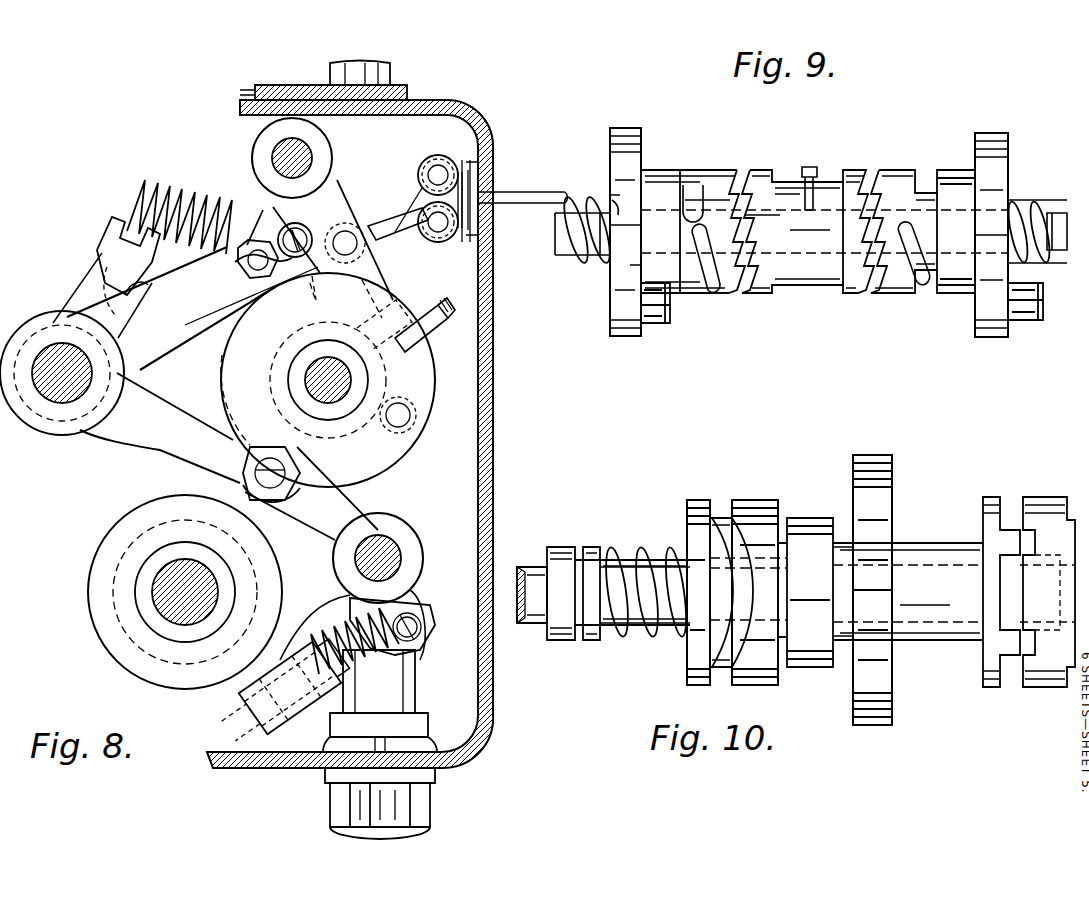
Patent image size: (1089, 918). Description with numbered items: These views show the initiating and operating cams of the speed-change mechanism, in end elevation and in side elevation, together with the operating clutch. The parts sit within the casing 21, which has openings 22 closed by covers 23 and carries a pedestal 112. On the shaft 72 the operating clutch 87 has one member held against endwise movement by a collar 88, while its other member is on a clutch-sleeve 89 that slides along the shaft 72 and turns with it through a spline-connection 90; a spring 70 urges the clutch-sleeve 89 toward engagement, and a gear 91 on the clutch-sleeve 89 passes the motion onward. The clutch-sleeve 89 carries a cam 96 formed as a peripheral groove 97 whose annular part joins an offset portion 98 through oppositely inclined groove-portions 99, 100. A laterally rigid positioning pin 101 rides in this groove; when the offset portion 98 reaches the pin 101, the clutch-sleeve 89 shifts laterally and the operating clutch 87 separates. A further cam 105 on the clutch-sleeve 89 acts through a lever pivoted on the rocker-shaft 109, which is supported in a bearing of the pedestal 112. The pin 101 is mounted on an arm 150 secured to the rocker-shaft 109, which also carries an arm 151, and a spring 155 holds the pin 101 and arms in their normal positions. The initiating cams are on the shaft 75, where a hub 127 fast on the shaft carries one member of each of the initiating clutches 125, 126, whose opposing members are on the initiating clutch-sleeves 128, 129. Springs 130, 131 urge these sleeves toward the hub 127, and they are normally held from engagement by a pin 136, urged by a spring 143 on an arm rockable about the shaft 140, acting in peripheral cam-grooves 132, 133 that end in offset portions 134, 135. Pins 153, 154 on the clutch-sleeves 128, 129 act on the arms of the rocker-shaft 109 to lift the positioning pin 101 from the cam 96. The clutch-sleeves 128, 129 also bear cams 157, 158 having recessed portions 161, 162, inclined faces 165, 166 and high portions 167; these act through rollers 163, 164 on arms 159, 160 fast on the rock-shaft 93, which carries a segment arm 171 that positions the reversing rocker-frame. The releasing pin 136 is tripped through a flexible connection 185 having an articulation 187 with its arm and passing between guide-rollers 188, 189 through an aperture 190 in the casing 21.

In FIG. 8, the casing 21 is at (493, 488).
In FIG. 8, the openings 22 is at (313, 110).
In FIG. 8, the covers 23 is at (392, 85).
In FIG. 10, the spring 70 is at (650, 620).
In FIG. 8, the shaft 72 is at (172, 605).
In FIG. 10, the shaft 72 is at (538, 605).
In FIG. 8, the shaft 75 is at (360, 395).
In FIG. 9, the shaft 75 is at (742, 290).
In FIG. 10, the operating clutch 87 is at (1020, 688).
In FIG. 10, the collar 88 is at (1035, 555).
In FIG. 10, the clutch-sleeve 89 is at (905, 548).
In FIG. 10, the spline-connection 90 is at (680, 555).
In FIG. 10, the gear 91 is at (818, 668).
In FIG. 8, the rock-shaft 93 is at (60, 385).
In FIG. 10, the cam 96 is at (755, 512).
In FIG. 10, the peripheral groove 97 is at (718, 512).
In FIG. 10, the offset portion 98 is at (745, 595).
In FIG. 10, the inclined groove-portion 99 is at (745, 575).
In FIG. 10, the inclined groove-portion 100 is at (783, 667).
In FIG. 8, the positioning pin 101 is at (258, 680).
In FIG. 10, the cam 105 is at (872, 715).
In FIG. 8, the rocker-shaft 109 is at (385, 560).
In FIG. 8, the pedestal 112 is at (400, 690).
In FIG. 9, the initiating clutch 125 is at (747, 172).
In FIG. 9, the initiating clutch 126 is at (866, 176).
In FIG. 9, the hub 127 is at (815, 190).
In FIG. 9, the initiating clutch-sleeve 128 is at (716, 175).
In FIG. 9, the initiating clutch-sleeve 129 is at (896, 178).
In FIG. 8, the spring 130 is at (368, 266).
In FIG. 9, the spring 130 is at (590, 262).
In FIG. 9, the spring 131 is at (1010, 215).
In FIG. 9, the cam 132 is at (688, 290).
In FIG. 9, the cam 133 is at (928, 298).
In FIG. 9, the offset portion 134 is at (705, 300).
In FIG. 9, the offset portion 135 is at (915, 268).
In FIG. 8, the pin 136 is at (420, 322).
In FIG. 8, the shaft 140 is at (300, 158).
In FIG. 8, the spring 143 is at (165, 195).
In FIG. 8, the arm 150 is at (322, 628).
In FIG. 8, the arm 151 is at (335, 497).
In FIG. 8, the pin 153 is at (410, 420).
In FIG. 9, the pin 154 is at (1032, 315).
In FIG. 8, the spring 155 is at (385, 655).
In FIG. 9, the spring 155 is at (658, 318).
In FIG. 8, the cam 157 is at (262, 300).
In FIG. 9, the cam 157 is at (622, 150).
In FIG. 9, the cam 158 is at (990, 150).
In FIG. 8, the arm 159 is at (178, 455).
In FIG. 8, the arm 160 is at (150, 308).
In FIG. 8, the recessed portion 161 is at (335, 410).
In FIG. 8, the recessed portion 162 is at (255, 300).
In FIG. 8, the roller 163 is at (285, 498).
In FIG. 8, the roller 164 is at (262, 236).
In FIG. 8, the inclined face 165 is at (330, 478).
In FIG. 8, the inclined face 166 is at (180, 337).
In FIG. 8, the high portions 167 is at (380, 372).
In FIG. 9, the high portions 167 is at (620, 183).
In FIG. 8, the segment arm 171 is at (110, 243).
In FIG. 8, the connection 185 is at (512, 196).
In FIG. 8, the articulation 187 is at (348, 235).
In FIG. 8, the guide-roller 188 is at (450, 232).
In FIG. 8, the guide-roller 189 is at (448, 163).
In FIG. 8, the aperture 190 is at (480, 180).